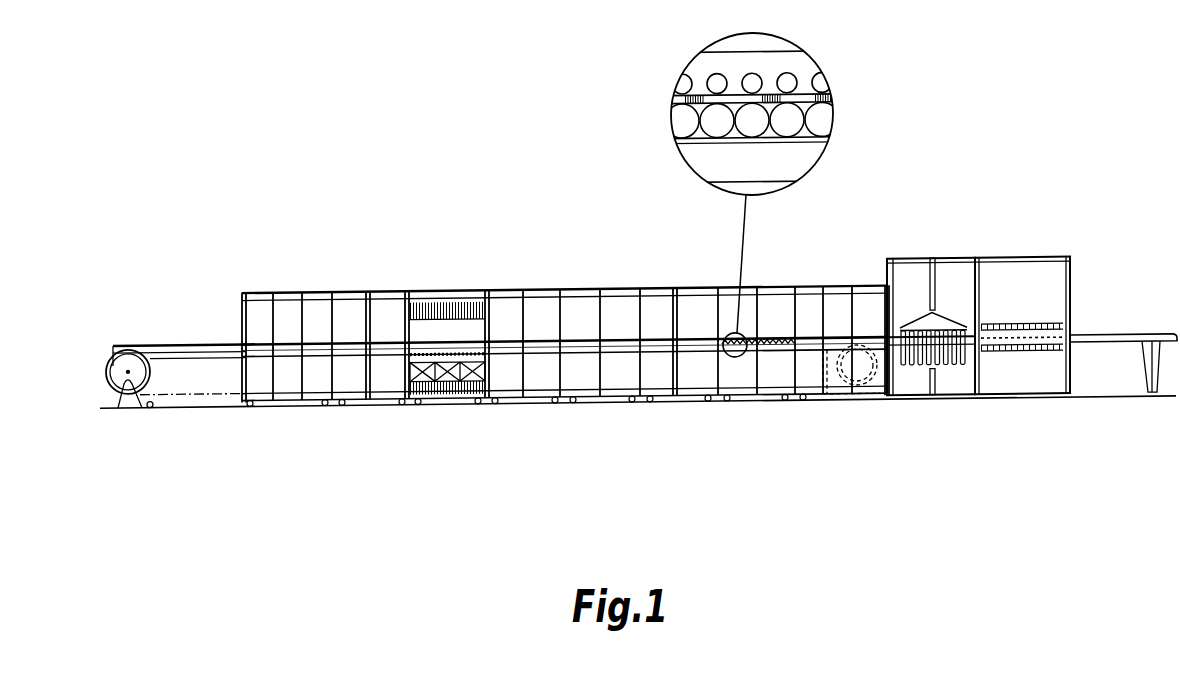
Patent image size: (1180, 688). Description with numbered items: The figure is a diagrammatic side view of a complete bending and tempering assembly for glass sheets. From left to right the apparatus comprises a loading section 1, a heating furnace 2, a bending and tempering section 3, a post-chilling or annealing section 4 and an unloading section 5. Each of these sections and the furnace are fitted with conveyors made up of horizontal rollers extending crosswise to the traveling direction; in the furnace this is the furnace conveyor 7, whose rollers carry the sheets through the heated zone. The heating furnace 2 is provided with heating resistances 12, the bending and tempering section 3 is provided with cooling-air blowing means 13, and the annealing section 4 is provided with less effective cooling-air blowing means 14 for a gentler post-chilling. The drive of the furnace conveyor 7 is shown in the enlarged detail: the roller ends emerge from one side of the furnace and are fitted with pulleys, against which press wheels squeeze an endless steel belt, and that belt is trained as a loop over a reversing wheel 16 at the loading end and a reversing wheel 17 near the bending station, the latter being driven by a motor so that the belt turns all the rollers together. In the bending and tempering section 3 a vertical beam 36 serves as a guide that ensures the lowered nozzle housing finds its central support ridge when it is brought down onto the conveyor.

The loading section 1 is at (170, 328).
The heating furnace 2 is at (605, 277).
The bending and tempering section 3 is at (921, 252).
The post-chilling or annealing section 4 is at (1041, 250).
The unloading section 5 is at (1127, 323).
The furnace conveyor 7 is at (772, 338).
The heating resistances 12 is at (452, 333).
The cooling-air blowing means 13 is at (947, 331).
The less effective cooling-air blowing means 14 is at (1010, 328).
The reversing wheel 16 is at (118, 367).
The reversing wheel 17 is at (862, 375).
The beam 36 is at (938, 278).